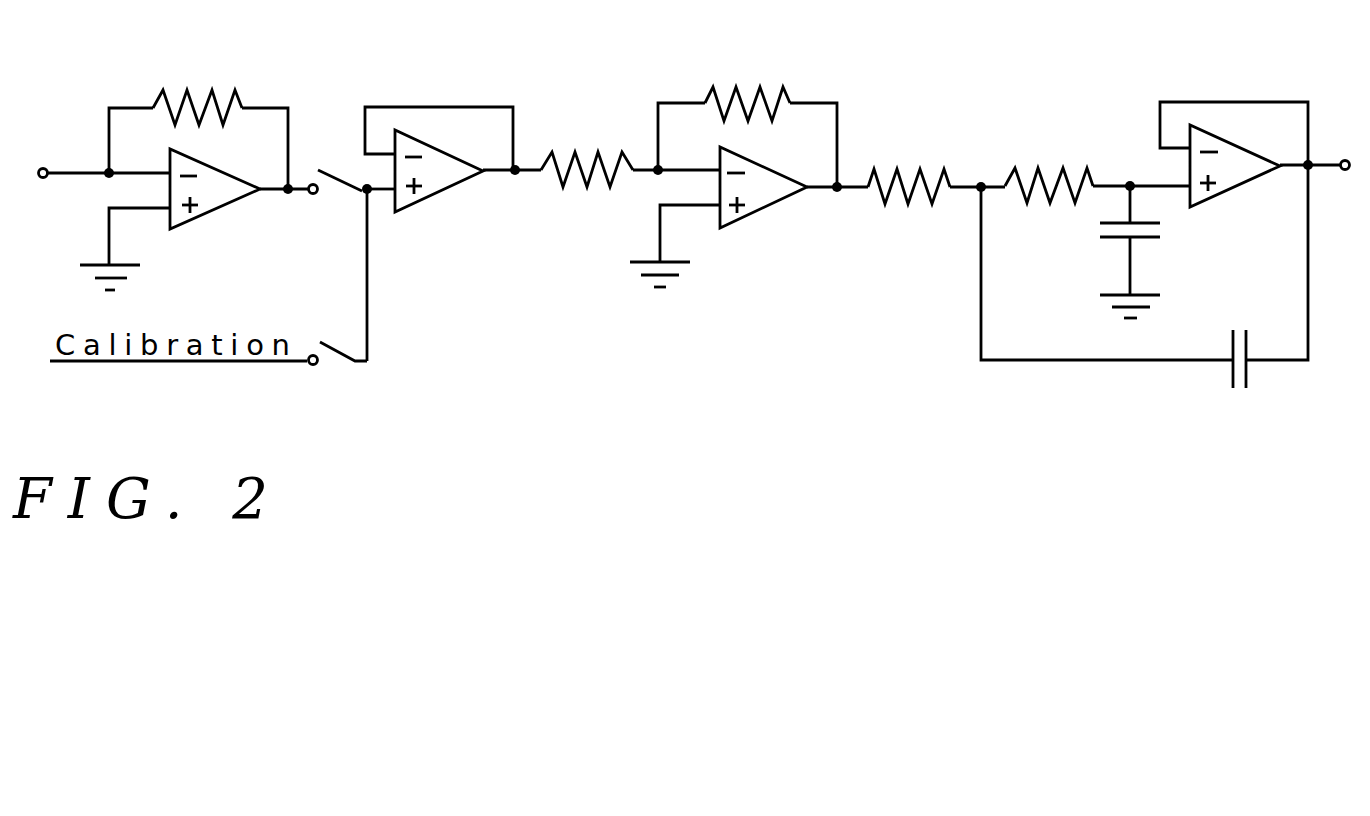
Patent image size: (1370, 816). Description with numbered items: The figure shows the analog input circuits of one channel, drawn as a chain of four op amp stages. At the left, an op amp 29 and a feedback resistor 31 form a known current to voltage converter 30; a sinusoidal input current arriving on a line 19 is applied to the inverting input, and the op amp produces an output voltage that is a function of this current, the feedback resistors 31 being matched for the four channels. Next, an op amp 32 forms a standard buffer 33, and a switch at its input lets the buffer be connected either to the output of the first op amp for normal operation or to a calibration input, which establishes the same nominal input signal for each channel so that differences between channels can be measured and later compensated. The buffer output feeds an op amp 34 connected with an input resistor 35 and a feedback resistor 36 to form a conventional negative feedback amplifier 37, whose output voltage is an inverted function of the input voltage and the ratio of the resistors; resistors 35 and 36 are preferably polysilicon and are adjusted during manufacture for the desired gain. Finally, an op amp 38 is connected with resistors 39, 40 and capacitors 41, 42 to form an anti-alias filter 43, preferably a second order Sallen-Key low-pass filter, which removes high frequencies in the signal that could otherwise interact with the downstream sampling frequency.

The line 19 is at (66, 173).
The op amp 29 is at (205, 207).
The current to voltage converter 30 is at (174, 177).
The feedback resistor 31 is at (187, 95).
The op amp 32 is at (427, 197).
The buffer 33 is at (451, 234).
The op amp 34 is at (742, 220).
The input resistor 35 is at (598, 152).
The feedback resistor 36 is at (737, 90).
The negative feedback amplifier 37 is at (749, 177).
The op amp 38 is at (1207, 200).
The resistor 39 is at (897, 169).
The resistor 40 is at (1078, 167).
The capacitor 41 is at (1117, 234).
The capacitor 42 is at (1232, 380).
The anti-alias filter 43 is at (1163, 262).